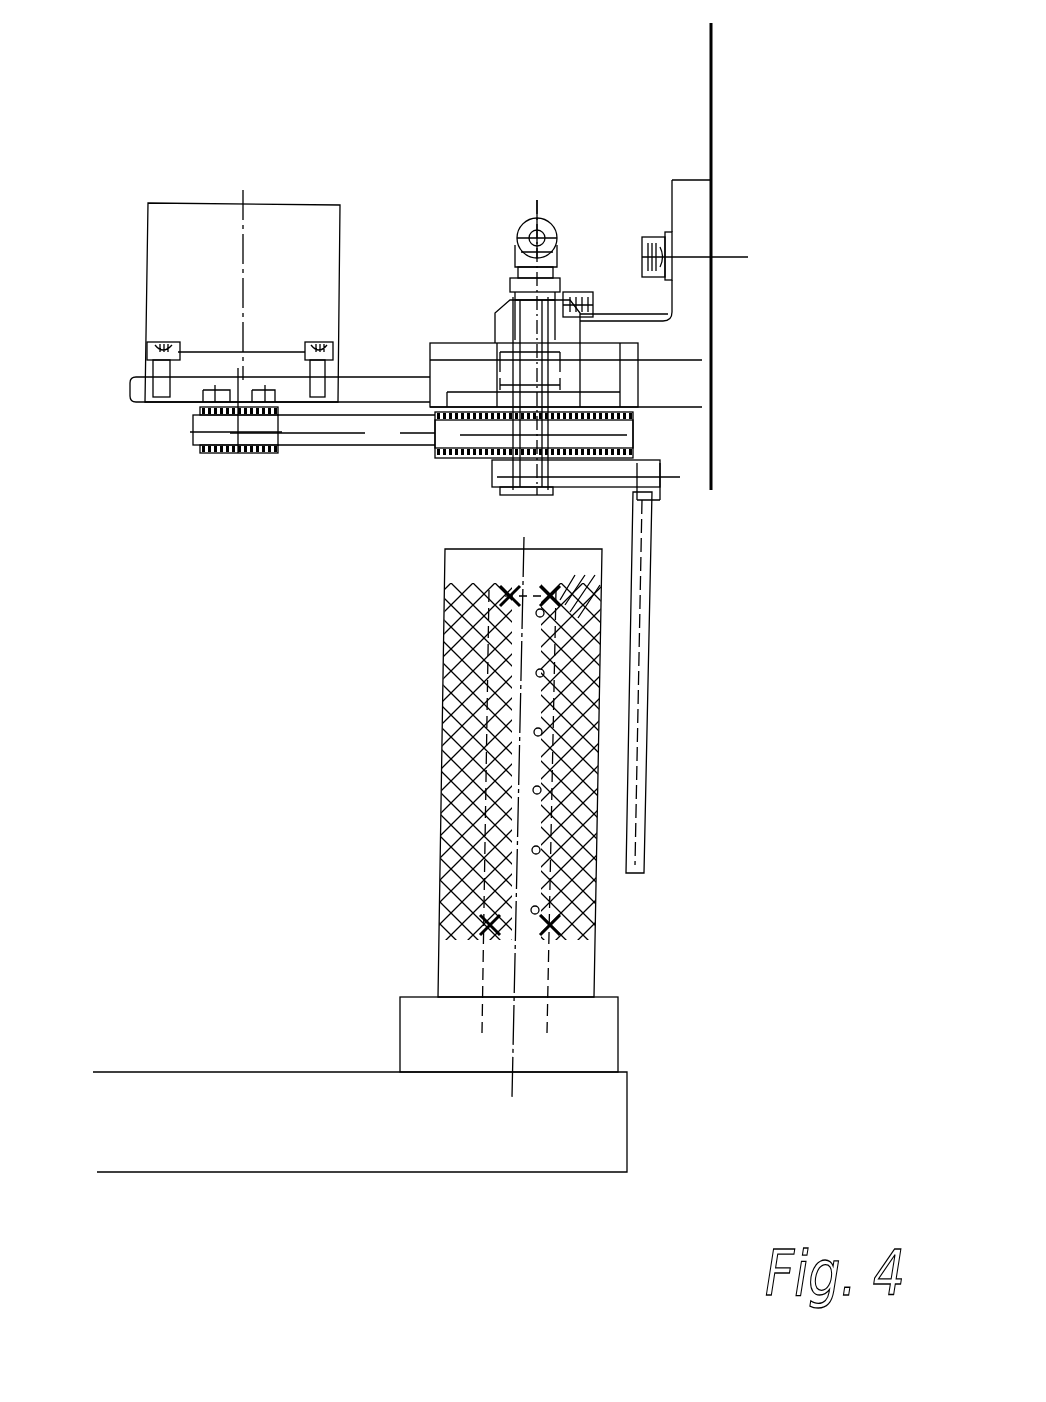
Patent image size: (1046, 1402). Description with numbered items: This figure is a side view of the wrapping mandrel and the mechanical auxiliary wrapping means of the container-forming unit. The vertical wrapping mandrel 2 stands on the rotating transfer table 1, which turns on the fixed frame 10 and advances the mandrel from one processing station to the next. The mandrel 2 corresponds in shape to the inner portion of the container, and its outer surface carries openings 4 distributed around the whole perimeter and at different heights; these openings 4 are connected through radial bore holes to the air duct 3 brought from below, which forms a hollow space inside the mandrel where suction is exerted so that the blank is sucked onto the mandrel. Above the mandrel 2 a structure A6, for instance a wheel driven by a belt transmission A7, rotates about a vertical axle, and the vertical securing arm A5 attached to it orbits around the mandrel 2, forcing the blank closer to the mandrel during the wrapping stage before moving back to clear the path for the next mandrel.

The transfer table 1 is at (405, 1147).
The wrapping mandrel 2 is at (500, 817).
The air duct 3 is at (483, 965).
The openings 4 is at (448, 798).
The fixed frame 10 is at (711, 115).
The securing arm A5 is at (650, 752).
The rotating structure A6 is at (463, 460).
The belt transmission A7 is at (315, 440).